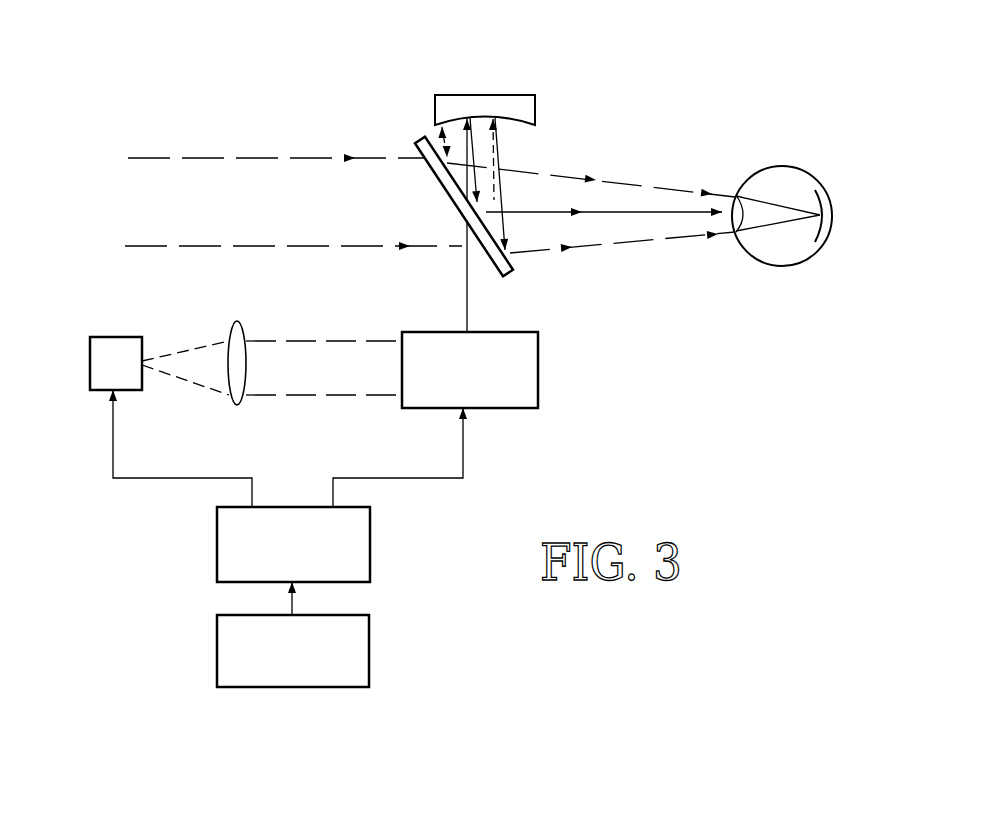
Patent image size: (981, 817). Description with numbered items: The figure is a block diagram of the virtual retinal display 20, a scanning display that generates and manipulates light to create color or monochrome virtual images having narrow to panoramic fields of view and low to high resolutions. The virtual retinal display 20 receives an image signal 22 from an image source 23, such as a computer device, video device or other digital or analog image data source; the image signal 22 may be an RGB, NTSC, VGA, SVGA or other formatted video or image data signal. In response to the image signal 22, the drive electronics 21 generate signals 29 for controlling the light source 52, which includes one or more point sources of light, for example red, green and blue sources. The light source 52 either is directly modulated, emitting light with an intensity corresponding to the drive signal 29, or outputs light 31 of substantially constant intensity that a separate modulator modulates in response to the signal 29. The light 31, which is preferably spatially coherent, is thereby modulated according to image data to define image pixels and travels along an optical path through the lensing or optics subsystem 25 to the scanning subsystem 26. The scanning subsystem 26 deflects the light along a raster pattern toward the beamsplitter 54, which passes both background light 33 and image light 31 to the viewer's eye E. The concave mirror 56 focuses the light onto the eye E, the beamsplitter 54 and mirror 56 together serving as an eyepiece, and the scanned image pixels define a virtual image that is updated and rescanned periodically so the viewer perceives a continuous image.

The virtual retinal display 20 is at (90, 154).
The background light 33 is at (222, 157).
The beamsplitter 54 is at (418, 142).
The concave mirror 56 is at (497, 93).
The viewer's eye E is at (776, 166).
The light source 52 is at (120, 337).
The light 31 is at (190, 348).
The lensing or optics subsystem 25 is at (242, 330).
The scanning subsystem 26 is at (538, 368).
The drive signals 29 is at (178, 478).
The drive electronics 21 is at (370, 556).
The image signal 22 is at (296, 606).
The image source 23 is at (370, 657).